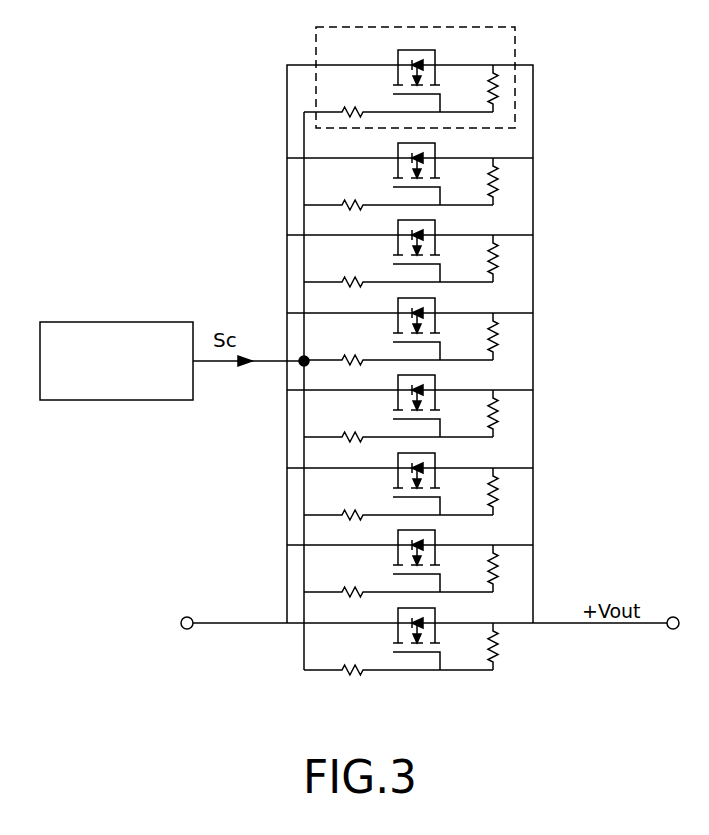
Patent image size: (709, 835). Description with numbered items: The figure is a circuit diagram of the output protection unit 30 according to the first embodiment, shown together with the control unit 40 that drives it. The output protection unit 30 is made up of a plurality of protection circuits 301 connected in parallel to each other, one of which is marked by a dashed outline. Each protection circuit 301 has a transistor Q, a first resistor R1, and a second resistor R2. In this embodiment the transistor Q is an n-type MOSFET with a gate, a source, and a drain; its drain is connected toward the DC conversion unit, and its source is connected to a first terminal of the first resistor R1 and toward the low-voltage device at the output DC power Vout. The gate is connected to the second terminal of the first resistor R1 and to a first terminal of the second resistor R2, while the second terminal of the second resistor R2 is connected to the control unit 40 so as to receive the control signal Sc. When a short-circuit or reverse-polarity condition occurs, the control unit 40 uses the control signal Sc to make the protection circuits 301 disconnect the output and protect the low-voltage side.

The output protection unit 30 is at (469, 351).
The protection circuit 301 is at (463, 77).
The control unit 40 is at (119, 332).
The transistor Q is at (405, 81).
The first resistor R1 is at (477, 88).
The second resistor R2 is at (398, 102).